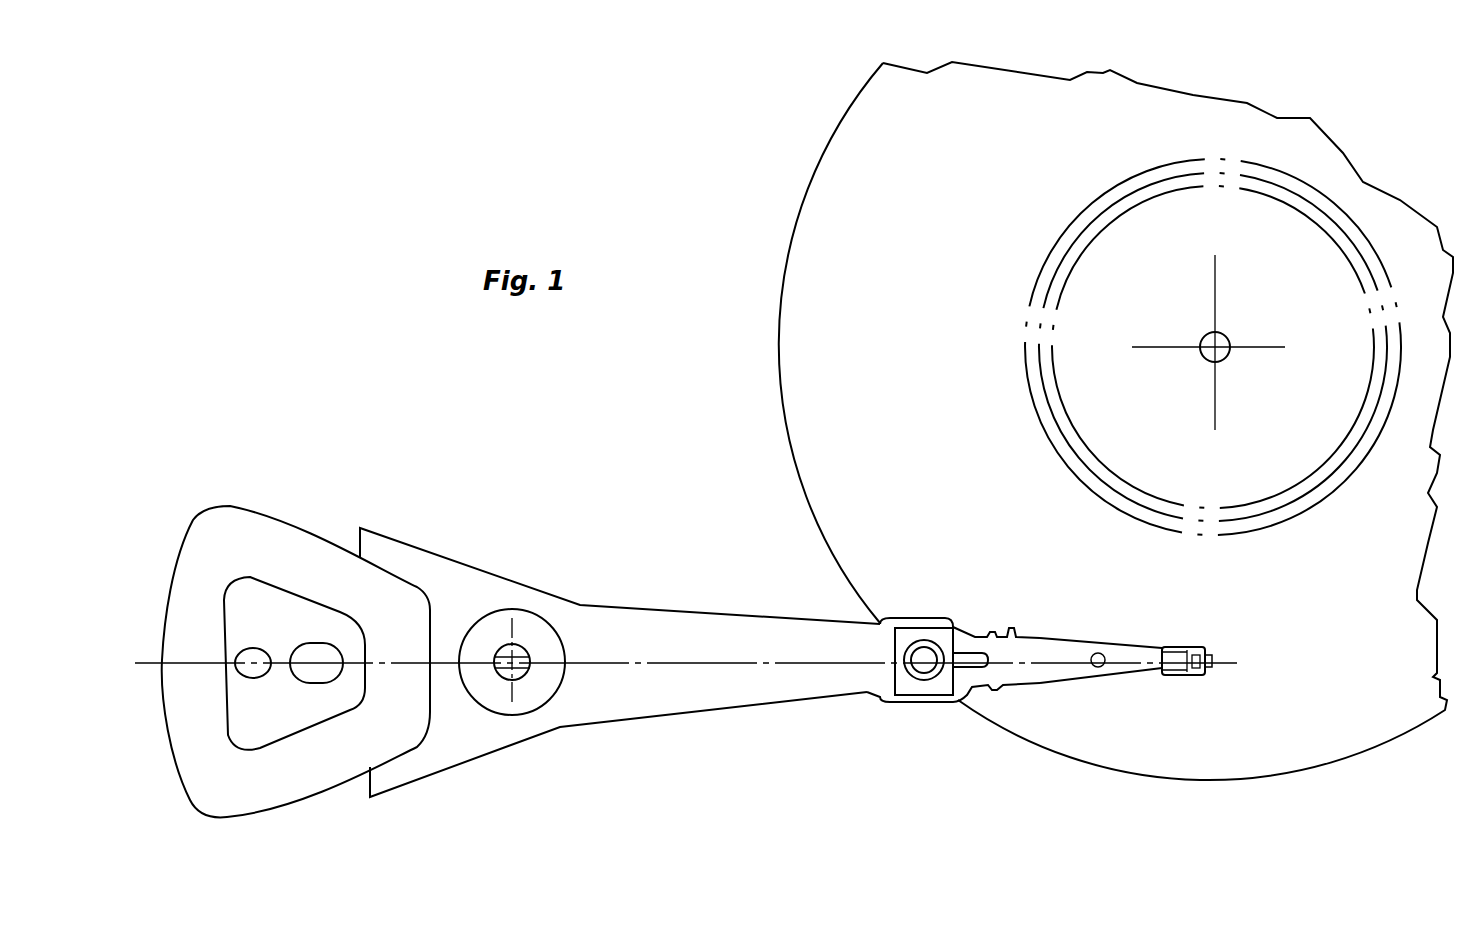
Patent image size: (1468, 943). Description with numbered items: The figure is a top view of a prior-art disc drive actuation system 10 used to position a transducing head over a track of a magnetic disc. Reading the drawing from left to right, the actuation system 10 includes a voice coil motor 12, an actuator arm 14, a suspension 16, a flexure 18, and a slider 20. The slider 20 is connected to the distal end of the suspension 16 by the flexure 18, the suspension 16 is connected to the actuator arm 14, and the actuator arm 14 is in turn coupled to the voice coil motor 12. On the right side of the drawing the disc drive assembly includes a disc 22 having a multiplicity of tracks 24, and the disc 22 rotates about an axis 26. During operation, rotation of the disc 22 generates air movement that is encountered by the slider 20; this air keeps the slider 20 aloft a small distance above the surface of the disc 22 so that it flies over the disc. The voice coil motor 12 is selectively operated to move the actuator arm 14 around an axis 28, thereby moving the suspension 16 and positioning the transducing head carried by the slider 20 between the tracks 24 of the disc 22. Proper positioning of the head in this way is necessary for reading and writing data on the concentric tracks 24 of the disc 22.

The disc drive actuation system 10 is at (608, 480).
The voice coil motor 12 is at (193, 510).
The actuator arm 14 is at (742, 615).
The suspension 16 is at (1085, 642).
The flexure 18 is at (1175, 647).
The slider 20 is at (1212, 665).
The disc 22 is at (792, 455).
The tracks 24 is at (1282, 493).
The axis 26 is at (1205, 335).
The axis 28 is at (502, 647).